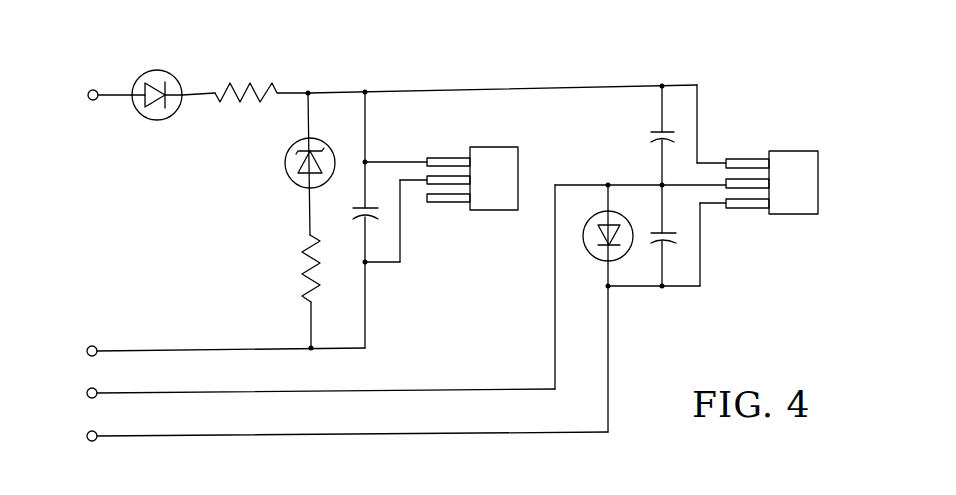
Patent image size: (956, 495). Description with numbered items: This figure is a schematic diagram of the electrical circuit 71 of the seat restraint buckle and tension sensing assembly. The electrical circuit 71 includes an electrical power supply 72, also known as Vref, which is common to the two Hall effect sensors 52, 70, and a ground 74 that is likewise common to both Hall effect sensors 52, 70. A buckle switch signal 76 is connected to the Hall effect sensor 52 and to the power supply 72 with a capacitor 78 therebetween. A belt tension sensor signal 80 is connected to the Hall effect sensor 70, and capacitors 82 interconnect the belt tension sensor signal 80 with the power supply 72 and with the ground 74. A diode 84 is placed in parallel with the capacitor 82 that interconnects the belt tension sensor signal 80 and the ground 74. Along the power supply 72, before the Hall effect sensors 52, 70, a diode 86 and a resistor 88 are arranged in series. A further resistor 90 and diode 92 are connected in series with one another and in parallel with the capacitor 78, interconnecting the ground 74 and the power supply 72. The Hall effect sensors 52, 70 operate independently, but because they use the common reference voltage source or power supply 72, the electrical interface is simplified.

The electrical circuit 71 is at (72, 74).
The electrical power supply 72 is at (88, 102).
The ground 74 is at (96, 439).
The buckle switch signal 76 is at (93, 338).
The belt tension sensor signal 80 is at (87, 391).
The diode 86 is at (158, 83).
The resistor 88 is at (255, 83).
The diode 92 is at (298, 155).
The resistor 90 is at (302, 252).
The capacitor 78 is at (378, 213).
The Hall effect sensor 52 is at (493, 155).
The capacitors 82 is at (677, 133).
The Hall effect sensor 70 is at (785, 152).
The diode 84 is at (595, 233).